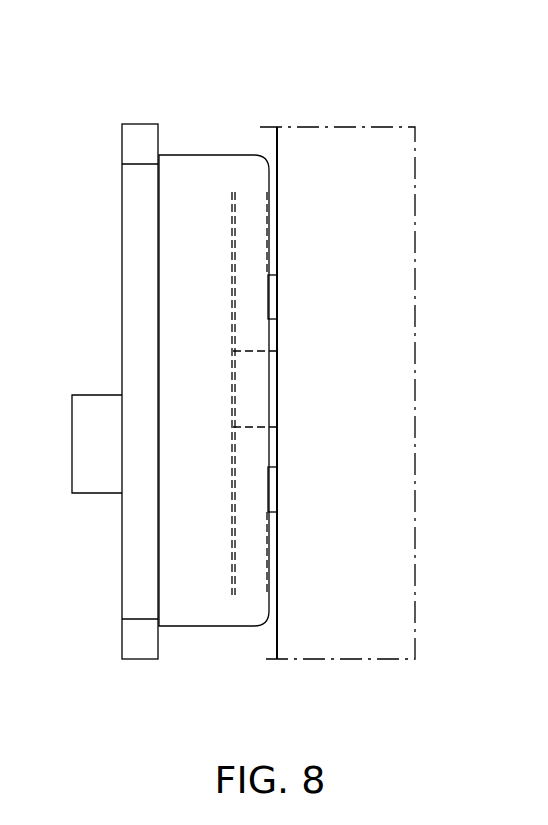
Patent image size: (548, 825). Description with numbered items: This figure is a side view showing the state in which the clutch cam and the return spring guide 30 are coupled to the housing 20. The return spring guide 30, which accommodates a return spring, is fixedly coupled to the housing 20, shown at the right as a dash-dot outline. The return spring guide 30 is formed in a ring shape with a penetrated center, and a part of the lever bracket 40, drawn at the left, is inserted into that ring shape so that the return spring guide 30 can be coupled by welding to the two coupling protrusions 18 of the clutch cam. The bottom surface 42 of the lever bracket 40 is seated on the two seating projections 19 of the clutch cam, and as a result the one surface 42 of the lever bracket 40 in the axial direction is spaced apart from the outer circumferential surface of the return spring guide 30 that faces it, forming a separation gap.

The coupling protrusion 18 is at (252, 382).
The seating projection 19 is at (277, 293).
The housing 20 is at (335, 161).
The return spring guide 30 is at (207, 154).
The lever bracket 40 is at (138, 123).
The bottom surface of the lever bracket 42 is at (266, 246).